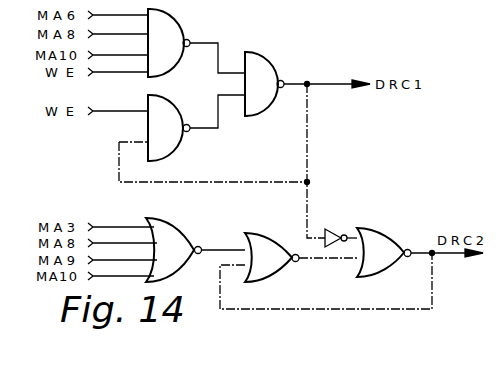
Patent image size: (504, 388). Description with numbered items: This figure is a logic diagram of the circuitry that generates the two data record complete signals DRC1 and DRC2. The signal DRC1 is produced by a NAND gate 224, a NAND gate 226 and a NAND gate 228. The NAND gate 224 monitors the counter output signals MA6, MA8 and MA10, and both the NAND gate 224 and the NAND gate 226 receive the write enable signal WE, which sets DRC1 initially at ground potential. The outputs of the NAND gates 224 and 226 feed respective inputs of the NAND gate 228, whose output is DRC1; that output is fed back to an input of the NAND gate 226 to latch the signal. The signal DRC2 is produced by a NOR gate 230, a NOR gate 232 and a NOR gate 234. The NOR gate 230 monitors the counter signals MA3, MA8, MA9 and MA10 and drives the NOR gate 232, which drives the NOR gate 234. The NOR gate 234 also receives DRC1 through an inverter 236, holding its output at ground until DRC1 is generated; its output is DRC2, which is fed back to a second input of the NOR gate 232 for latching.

The NAND gate 224 is at (165, 30).
The NAND gate 226 is at (165, 140).
The NAND gate 228 is at (305, 53).
The NOR gate 230 is at (170, 237).
The NOR gate 232 is at (272, 268).
The NOR gate 234 is at (380, 240).
The inverter 236 is at (331, 228).